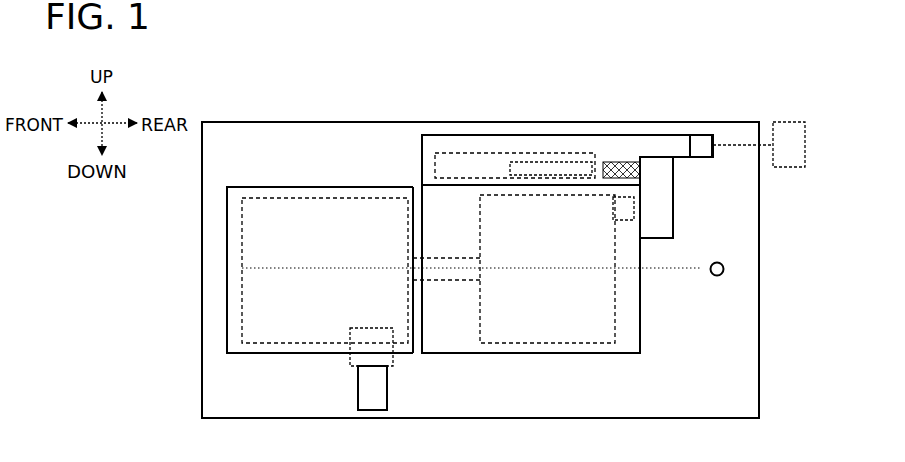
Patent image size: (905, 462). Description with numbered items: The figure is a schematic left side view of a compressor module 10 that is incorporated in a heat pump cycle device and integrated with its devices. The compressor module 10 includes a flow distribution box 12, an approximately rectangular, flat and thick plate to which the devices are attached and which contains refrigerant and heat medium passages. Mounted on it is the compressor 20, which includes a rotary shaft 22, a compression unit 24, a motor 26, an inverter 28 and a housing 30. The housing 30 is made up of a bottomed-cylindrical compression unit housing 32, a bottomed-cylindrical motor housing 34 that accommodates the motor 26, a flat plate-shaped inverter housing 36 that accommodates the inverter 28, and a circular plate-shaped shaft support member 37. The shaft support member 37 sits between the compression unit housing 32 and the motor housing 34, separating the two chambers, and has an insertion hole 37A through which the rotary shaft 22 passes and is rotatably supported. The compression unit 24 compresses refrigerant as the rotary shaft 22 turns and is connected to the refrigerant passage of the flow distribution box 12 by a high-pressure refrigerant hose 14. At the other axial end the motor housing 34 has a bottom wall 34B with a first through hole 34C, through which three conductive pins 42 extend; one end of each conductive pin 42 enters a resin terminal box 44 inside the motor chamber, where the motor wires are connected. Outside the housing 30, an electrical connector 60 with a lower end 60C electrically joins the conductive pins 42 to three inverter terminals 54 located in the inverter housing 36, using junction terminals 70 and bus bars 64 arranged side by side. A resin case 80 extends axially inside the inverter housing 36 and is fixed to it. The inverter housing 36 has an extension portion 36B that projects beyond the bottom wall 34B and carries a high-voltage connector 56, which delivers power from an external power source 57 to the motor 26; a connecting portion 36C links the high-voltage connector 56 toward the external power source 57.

The compressor module 10 is at (767, 108).
The flow distribution box 12 is at (746, 356).
The high-pressure refrigerant hose 14 is at (368, 385).
The compressor 20 is at (488, 117).
The rotary shaft 22 is at (462, 283).
The compression unit 24 is at (243, 201).
The motor 26 is at (613, 281).
The inverter 28 is at (493, 153).
The housing 30 is at (403, 158).
The compression unit housing 32 is at (356, 190).
The motor housing 34 is at (467, 330).
The bottom wall 34B is at (640, 278).
The first through hole 34C is at (640, 208).
The inverter housing 36 is at (482, 145).
The extension portion 36B is at (670, 145).
The connecting portion 36C is at (713, 150).
The shaft support member 37 is at (418, 188).
The insertion hole 37A is at (420, 270).
The conductive pin 42 is at (636, 207).
The terminal box 44 is at (702, 254).
The inverter terminal 54 is at (551, 160).
The high-voltage connector 56 is at (700, 140).
The external power source 57 is at (797, 135).
The electrical connector 60 is at (673, 207).
The lower end of bracket 60C is at (673, 230).
The bus bar 64 is at (648, 155).
The junction terminal 70 is at (620, 170).
The resin case 80 is at (600, 162).